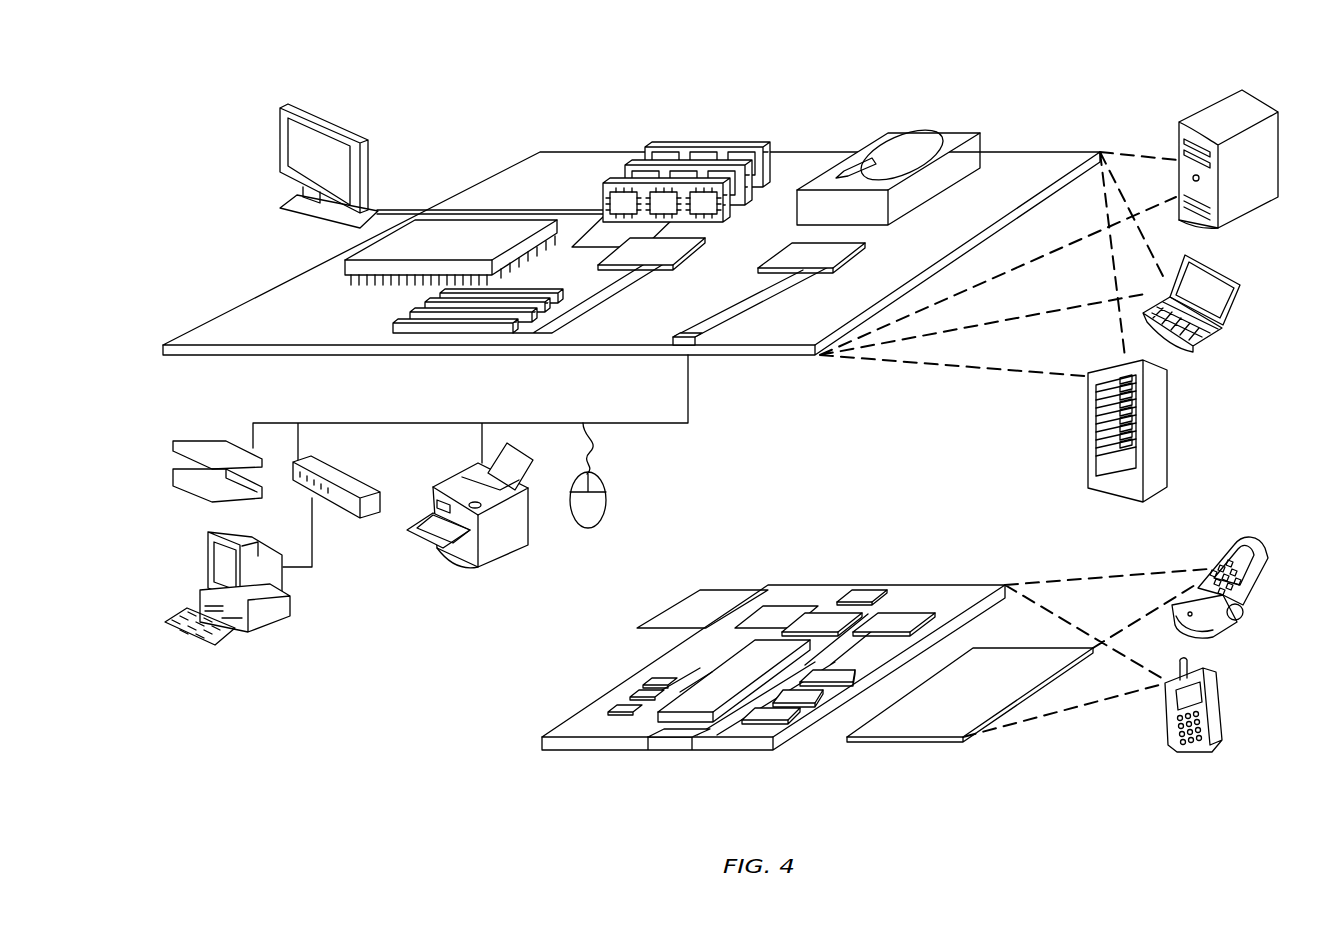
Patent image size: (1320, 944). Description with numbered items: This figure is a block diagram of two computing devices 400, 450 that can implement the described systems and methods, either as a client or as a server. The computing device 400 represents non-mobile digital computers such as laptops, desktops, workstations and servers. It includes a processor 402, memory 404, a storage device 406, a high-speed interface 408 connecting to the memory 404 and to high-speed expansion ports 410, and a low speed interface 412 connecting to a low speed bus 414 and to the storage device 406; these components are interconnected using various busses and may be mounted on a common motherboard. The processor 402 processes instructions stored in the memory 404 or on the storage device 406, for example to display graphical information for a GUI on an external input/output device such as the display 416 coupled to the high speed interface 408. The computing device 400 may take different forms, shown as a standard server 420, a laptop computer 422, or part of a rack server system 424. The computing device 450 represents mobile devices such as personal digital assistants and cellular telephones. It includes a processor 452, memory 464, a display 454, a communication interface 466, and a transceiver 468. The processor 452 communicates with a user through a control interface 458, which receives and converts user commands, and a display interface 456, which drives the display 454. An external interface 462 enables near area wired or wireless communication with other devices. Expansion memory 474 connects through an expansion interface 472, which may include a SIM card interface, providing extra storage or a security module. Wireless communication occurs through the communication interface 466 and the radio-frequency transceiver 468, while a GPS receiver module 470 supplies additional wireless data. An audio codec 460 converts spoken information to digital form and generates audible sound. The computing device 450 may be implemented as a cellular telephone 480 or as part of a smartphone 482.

The computing device 400 is at (461, 129).
The processor 402 is at (357, 264).
The memory 404 is at (658, 150).
The storage device 406 is at (878, 138).
The high-speed interface 408 is at (632, 250).
The high-speed expansion ports 410 is at (405, 320).
The low speed interface 412 is at (788, 252).
The low speed bus 414 is at (700, 348).
The display 416 is at (283, 108).
The standard server 420 is at (1178, 142).
The laptop computer 422 is at (1240, 278).
The rack server system 424 is at (1090, 460).
The computing device 450 is at (521, 747).
The processor 452 is at (705, 703).
The display 454 is at (945, 740).
The display interface 456 is at (777, 715).
The control interface 458 is at (800, 695).
The audio codec 460 is at (830, 678).
The external interface 462 is at (675, 737).
The memory 464 is at (628, 700).
The communication interface 466 is at (820, 618).
The transceiver 468 is at (892, 618).
The GPS receiver module 470 is at (870, 590).
The expansion interface 472 is at (745, 600).
The expansion memory 474 is at (678, 600).
The cellular telephone 480 is at (1207, 560).
The smartphone 482 is at (1162, 712).